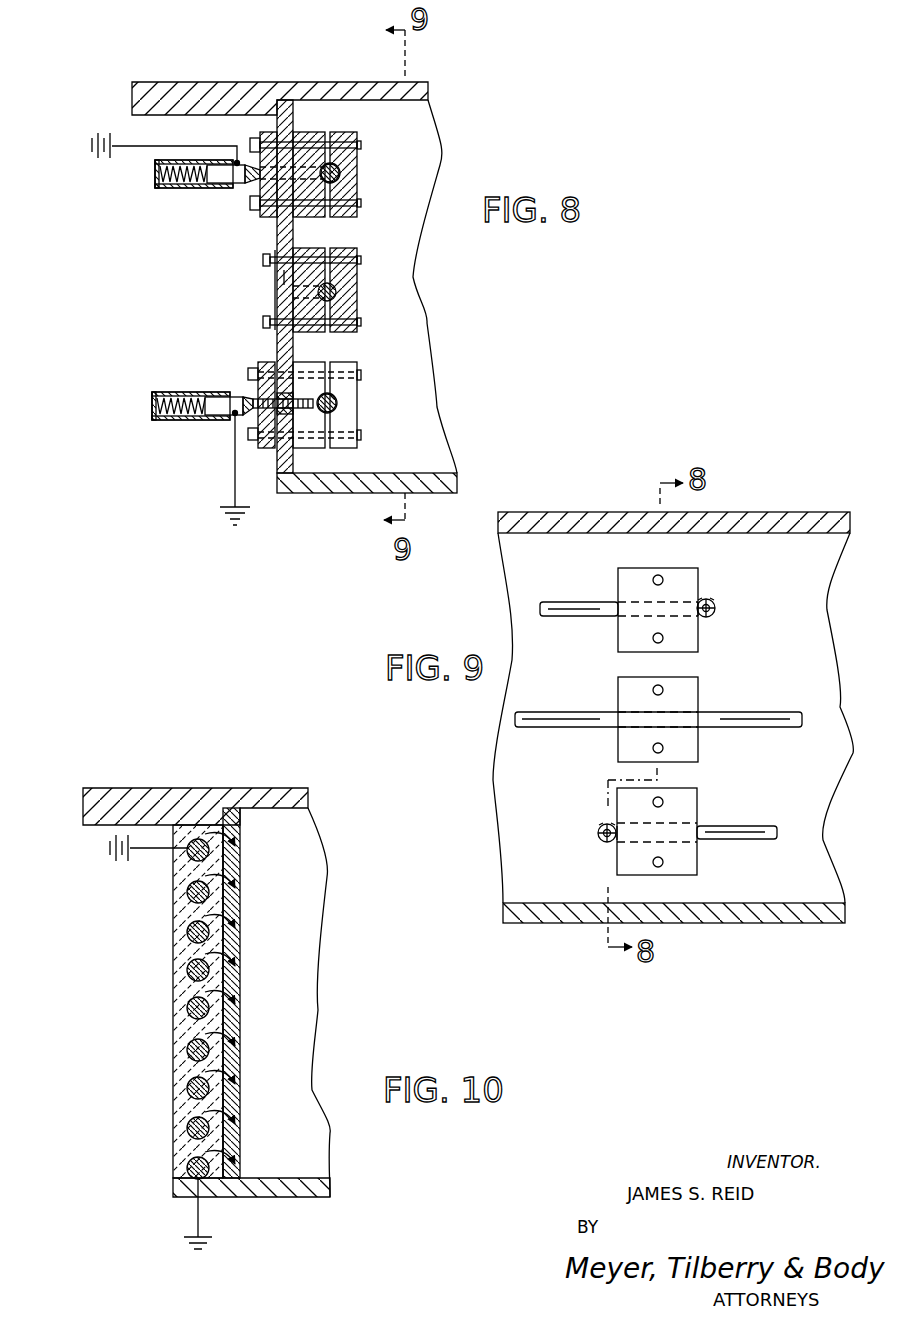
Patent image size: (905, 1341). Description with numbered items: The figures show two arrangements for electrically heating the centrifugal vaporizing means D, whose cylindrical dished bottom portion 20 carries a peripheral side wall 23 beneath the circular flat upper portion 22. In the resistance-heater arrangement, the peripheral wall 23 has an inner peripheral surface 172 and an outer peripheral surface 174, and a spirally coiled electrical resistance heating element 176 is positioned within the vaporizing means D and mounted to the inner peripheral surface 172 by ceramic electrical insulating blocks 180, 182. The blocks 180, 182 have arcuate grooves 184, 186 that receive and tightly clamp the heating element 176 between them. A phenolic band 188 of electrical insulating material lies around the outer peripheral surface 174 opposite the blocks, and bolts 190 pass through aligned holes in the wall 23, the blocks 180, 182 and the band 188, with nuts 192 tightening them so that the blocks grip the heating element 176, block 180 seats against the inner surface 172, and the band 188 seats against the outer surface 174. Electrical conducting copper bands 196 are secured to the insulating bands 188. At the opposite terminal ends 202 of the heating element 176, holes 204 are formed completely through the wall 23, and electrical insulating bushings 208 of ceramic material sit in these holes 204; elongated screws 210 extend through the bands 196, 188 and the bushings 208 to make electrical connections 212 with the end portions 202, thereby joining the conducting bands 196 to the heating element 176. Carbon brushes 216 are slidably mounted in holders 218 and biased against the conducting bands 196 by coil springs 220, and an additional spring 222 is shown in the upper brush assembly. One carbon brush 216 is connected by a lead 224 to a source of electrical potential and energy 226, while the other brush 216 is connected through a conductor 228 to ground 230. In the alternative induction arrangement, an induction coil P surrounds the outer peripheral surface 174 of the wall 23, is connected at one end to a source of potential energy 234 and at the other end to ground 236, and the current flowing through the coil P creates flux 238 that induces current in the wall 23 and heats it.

In FIG. 10, the dished bottom portion 20 is at (284, 1197).
In FIG. 8, the flat upper portion 22 is at (135, 82).
In FIG. 10, the flat upper portion 22 is at (206, 794).
In FIG. 8, the peripheral side wall 23 is at (284, 278).
In FIG. 10, the peripheral side wall 23 is at (232, 908).
In FIG. 8, the inner peripheral surface 172 is at (293, 345).
In FIG. 10, the inner peripheral surface 172 is at (240, 985).
In FIG. 8, the outer peripheral surface 174 is at (275, 290).
In FIG. 10, the outer peripheral surface 174 is at (212, 1020).
In FIG. 8, the electrical resistance heating element 176 is at (338, 172).
In FIG. 9, the electrical resistance heating element 176 is at (565, 602).
In FIG. 8, the electrical insulating block 180 is at (310, 132).
In FIG. 8, the electrical insulating block 182 is at (340, 132).
In FIG. 9, the electrical insulating block 182 is at (700, 580).
In FIG. 8, the arcuate groove 184 is at (337, 180).
In FIG. 8, the arcuate groove 186 is at (318, 265).
In FIG. 8, the band of electrical insulating material 188 is at (264, 133).
In FIG. 8, the bolts 190 is at (361, 145).
In FIG. 9, the bolts 190 is at (660, 578).
In FIG. 8, the nuts 192 is at (250, 145).
In FIG. 8, the electrical conducting copper band 196 is at (247, 186).
In FIG. 9, the terminal end portion 202 is at (708, 619).
In FIG. 8, the hole 204 is at (288, 414).
In FIG. 8, the electrical insulating bushing 208 is at (277, 412).
In FIG. 9, the electrical insulating bushing 208 is at (715, 605).
In FIG. 8, the elongated screw 210 is at (330, 396).
In FIG. 9, the electrical connection 212 is at (716, 610).
In FIG. 8, the carbon brush 216 is at (215, 186).
In FIG. 8, the holder 218 is at (155, 176).
In FIG. 8, the coil spring 220 is at (156, 405).
In FIG. 8, the compression spring 222 is at (178, 186).
In FIG. 8, the lead 224 is at (125, 146).
In FIG. 8, the source of electrical potential and energy 226 is at (90, 150).
In FIG. 8, the conductor 228 is at (222, 497).
In FIG. 8, the ground 230 is at (240, 524).
In FIG. 10, the source of potential energy 234 is at (125, 862).
In FIG. 10, the ground 236 is at (186, 1245).
In FIG. 10, the flux 238 is at (230, 872).
In FIG. 8, the centrifugal vaporizing means D is at (279, 78).
In FIG. 10, the centrifugal vaporizing means D is at (285, 828).
In FIG. 10, the induction coil P is at (185, 935).